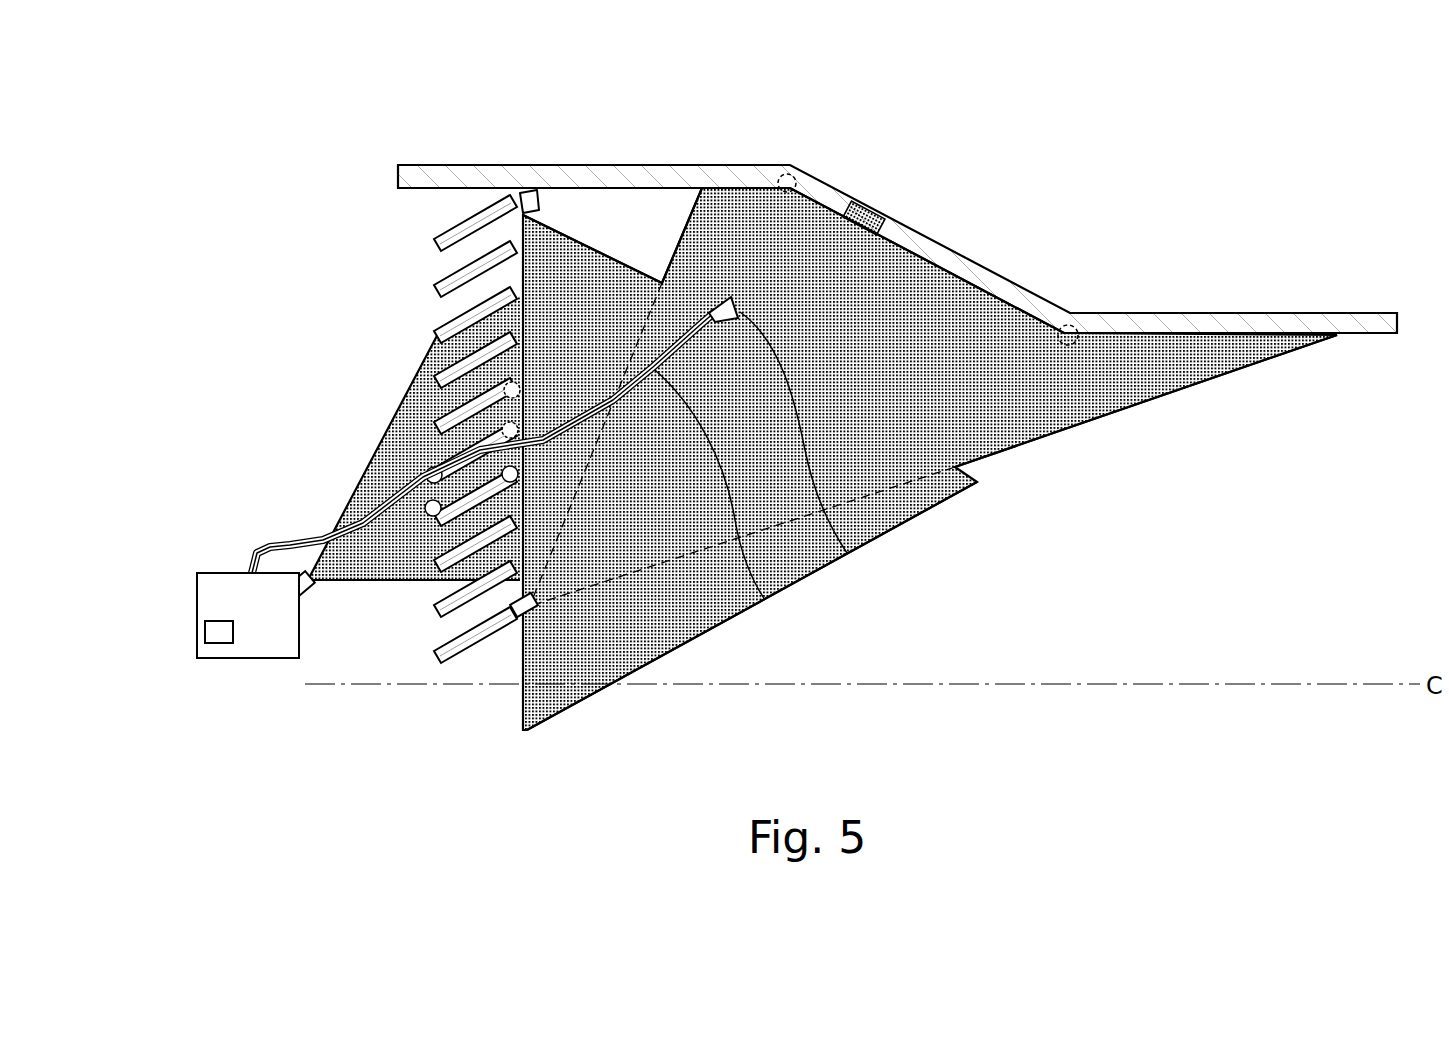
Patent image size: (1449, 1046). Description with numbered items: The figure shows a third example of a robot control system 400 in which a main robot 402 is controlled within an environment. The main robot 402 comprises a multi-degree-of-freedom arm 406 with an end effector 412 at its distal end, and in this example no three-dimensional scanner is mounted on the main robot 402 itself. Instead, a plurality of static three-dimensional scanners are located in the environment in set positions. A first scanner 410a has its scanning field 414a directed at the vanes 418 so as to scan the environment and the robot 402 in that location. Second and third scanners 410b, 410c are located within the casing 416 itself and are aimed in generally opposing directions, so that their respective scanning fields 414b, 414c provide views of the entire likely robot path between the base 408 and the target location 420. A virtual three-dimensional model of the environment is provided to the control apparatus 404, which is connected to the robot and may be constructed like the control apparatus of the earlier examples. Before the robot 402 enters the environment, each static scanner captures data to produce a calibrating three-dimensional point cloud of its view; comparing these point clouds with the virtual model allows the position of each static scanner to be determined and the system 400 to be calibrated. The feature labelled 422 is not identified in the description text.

The robot control system 400 is at (193, 617).
The main robot 402 is at (300, 545).
The control apparatus 404 is at (217, 645).
The multi-degree-of-freedom arm 406 is at (762, 603).
The base 408 is at (197, 627).
The first 3D scanner 410a is at (310, 596).
The second 3D scanner 410b is at (538, 195).
The third 3D scanner 410c is at (520, 615).
The end effector 412 is at (845, 553).
The scanning field 414a is at (393, 440).
The scanning field 414b is at (608, 278).
The scanning field 414c is at (1030, 405).
The casing 416 is at (1217, 313).
The vanes 418 is at (433, 280).
The target location 420 is at (862, 210).
The joint 422 is at (1077, 339).